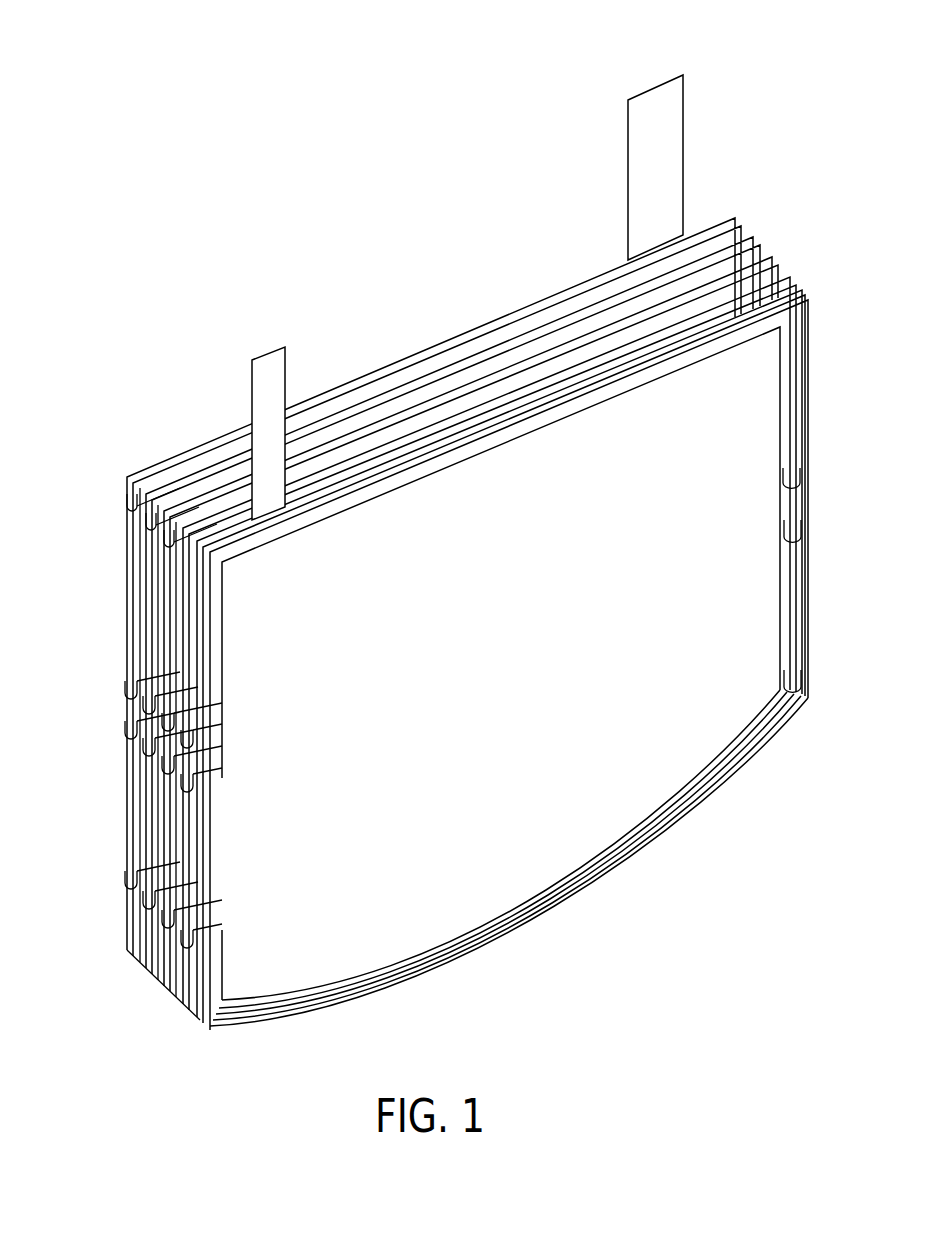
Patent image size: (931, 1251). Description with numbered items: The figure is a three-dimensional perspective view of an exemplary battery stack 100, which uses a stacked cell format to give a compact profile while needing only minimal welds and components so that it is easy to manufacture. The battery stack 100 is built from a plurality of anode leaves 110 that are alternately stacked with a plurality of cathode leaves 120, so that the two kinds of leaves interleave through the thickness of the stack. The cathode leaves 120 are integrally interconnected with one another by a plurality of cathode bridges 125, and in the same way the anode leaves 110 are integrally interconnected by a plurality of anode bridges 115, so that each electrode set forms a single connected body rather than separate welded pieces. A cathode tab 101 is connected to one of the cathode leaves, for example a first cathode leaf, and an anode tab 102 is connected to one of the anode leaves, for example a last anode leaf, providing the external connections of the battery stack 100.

The battery stack 100 is at (450, 74).
The cathode tab 101 is at (267, 350).
The anode tab 102 is at (685, 132).
The anode leaves 110 is at (620, 793).
The anode bridges 115 is at (123, 753).
The cathode leaves 120 is at (782, 262).
The cathode bridges 125 is at (127, 518).